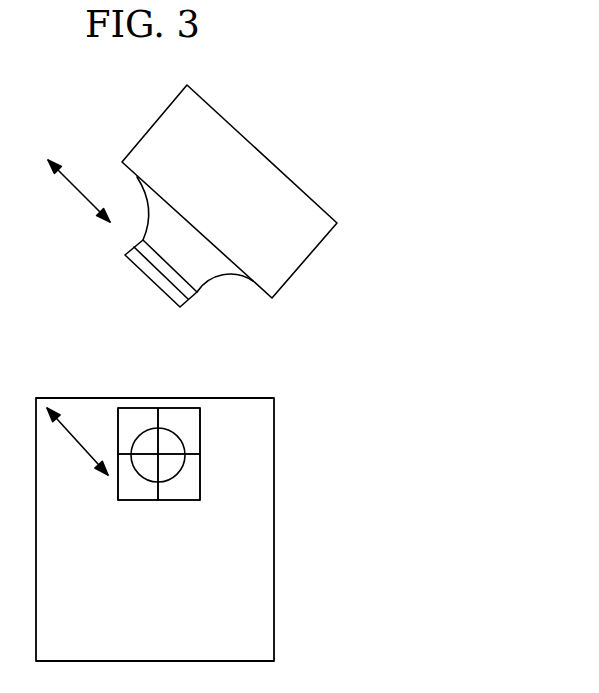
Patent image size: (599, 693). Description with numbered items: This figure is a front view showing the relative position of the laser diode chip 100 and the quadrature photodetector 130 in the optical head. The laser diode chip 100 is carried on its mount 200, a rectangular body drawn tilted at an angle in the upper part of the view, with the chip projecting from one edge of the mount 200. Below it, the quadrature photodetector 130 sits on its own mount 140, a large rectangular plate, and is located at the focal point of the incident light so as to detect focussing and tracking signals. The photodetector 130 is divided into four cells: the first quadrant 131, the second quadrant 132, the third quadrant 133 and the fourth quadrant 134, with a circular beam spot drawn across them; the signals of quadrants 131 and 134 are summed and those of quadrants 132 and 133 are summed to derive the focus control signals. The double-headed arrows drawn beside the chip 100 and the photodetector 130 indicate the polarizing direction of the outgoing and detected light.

The laser diode chip 100 is at (148, 276).
The quadrature photodetector 130 is at (207, 376).
The first quadrant 131 is at (188, 423).
The second quadrant 132 is at (185, 478).
The third quadrant 133 is at (138, 487).
The fourth quadrant 134 is at (137, 408).
The mount 140 is at (255, 465).
The mount 200 is at (273, 162).